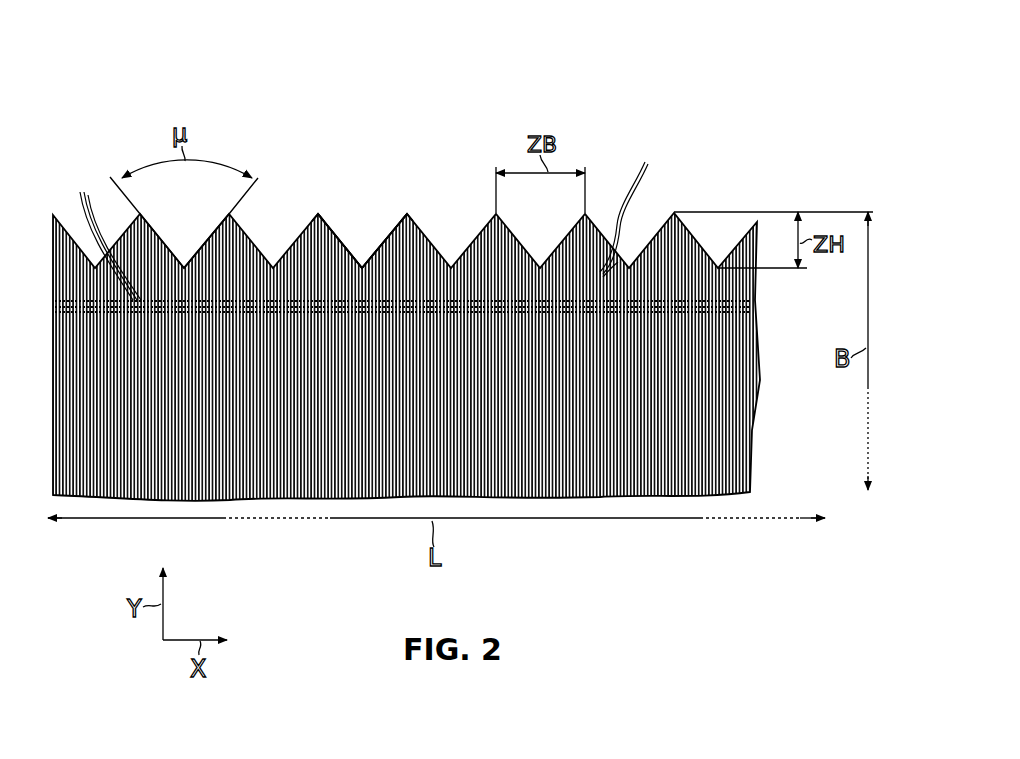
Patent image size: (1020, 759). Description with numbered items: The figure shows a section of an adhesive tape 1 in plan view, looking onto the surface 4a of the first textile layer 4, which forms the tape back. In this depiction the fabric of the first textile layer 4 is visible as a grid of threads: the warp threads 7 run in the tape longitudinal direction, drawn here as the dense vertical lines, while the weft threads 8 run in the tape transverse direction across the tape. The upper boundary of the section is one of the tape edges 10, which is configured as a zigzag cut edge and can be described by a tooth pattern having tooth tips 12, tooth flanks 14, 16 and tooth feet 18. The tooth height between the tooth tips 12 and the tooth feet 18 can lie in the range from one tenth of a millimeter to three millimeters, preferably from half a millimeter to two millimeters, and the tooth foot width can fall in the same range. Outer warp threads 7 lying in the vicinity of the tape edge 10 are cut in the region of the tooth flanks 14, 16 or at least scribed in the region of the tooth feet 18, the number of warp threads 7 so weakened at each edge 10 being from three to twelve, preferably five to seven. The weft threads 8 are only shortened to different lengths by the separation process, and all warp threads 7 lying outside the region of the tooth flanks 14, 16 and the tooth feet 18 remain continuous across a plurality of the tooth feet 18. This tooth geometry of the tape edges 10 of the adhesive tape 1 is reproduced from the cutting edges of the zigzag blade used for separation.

The adhesive tape 1 is at (779, 99).
The first textile layer 4 is at (406, 357).
The surface of the first textile layer 4a is at (233, 262).
The warp threads 7 is at (109, 230).
The weft threads 8 is at (633, 213).
The tape edges 10 is at (473, 113).
The tooth tips 12 is at (343, 233).
The tooth flank 14 is at (385, 232).
The tooth flank 16 is at (410, 213).
The tooth feet 18 is at (320, 213).